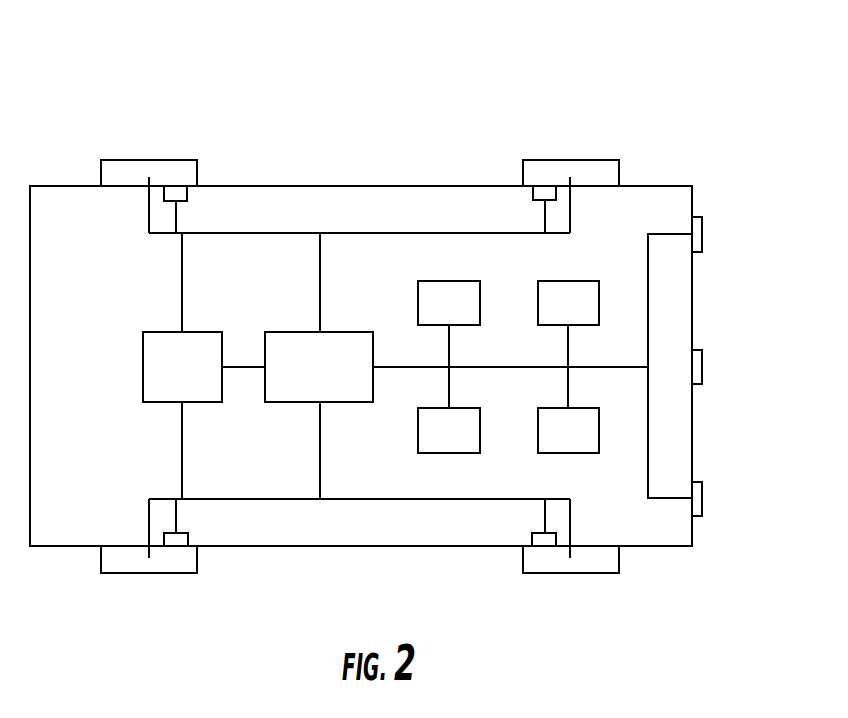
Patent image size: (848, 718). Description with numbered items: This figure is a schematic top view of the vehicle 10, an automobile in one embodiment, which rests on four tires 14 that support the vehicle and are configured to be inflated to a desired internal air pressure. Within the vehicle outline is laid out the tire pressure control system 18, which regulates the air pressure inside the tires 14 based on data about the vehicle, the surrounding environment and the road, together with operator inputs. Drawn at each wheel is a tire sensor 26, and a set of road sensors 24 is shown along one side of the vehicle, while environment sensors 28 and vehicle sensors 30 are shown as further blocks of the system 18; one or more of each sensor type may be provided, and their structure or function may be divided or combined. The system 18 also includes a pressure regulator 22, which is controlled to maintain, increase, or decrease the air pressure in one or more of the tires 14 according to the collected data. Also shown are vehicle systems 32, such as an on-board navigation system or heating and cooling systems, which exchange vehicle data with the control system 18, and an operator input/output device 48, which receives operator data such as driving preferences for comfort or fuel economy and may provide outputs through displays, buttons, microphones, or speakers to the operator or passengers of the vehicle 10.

The vehicle 10 is at (687, 118).
The tires 14 is at (168, 160).
The tire pressure control system 18 is at (133, 300).
The pressure regulator 22 is at (197, 330).
The road sensors 24 is at (702, 240).
The tire sensors 26 is at (187, 194).
The environment sensors 28 is at (570, 281).
The vehicle sensors 30 is at (344, 330).
The vehicle systems 32 is at (450, 281).
The operator input/output device 48 is at (465, 408).